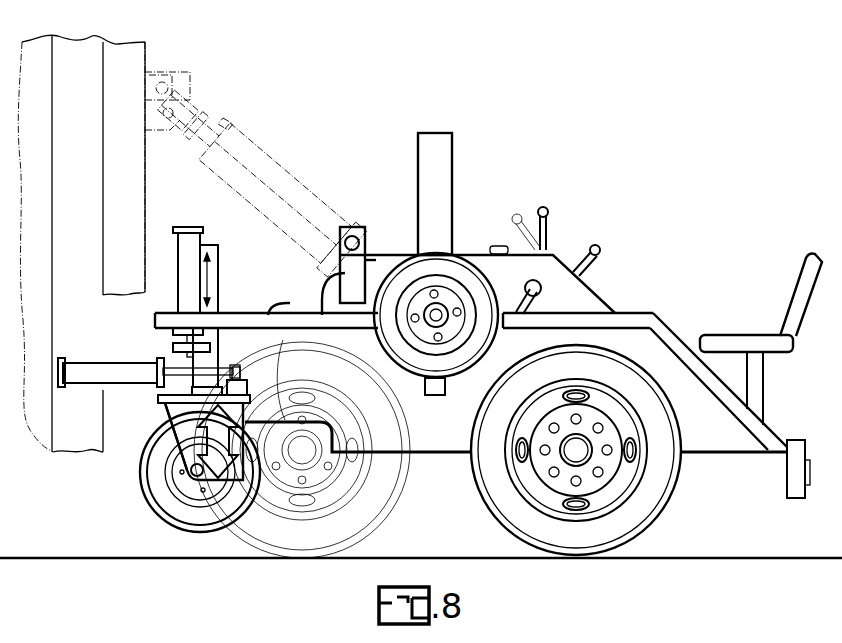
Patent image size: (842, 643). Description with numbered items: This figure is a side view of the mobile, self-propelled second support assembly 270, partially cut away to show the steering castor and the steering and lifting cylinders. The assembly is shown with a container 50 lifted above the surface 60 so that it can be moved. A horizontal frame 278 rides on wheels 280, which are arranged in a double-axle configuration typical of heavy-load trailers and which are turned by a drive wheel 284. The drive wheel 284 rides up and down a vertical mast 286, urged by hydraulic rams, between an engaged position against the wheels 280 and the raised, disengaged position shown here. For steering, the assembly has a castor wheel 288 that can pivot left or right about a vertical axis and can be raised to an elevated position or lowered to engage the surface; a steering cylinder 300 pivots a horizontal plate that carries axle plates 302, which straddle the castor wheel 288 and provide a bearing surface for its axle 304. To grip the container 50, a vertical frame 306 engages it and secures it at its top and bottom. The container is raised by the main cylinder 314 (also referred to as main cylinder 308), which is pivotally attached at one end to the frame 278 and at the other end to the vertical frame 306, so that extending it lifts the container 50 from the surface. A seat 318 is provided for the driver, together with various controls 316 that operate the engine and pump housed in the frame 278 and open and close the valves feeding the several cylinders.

The container 50 is at (34, 57).
The surface 60 is at (76, 558).
The second support assembly 270 is at (618, 275).
The frame 278 is at (290, 313).
The wheels 280 is at (664, 497).
The drive wheel 284 is at (397, 262).
The vertical mast 286 is at (433, 133).
The castor wheel 288 is at (163, 518).
The steering cylinder 300 is at (120, 367).
The axle plates 302 is at (186, 453).
The axle 304 is at (193, 473).
The vertical frame 306 is at (127, 70).
The main cylinder 308 is at (253, 157).
The main cylinder 314 is at (257, 204).
The controls 316 is at (600, 240).
The seat 318 is at (792, 302).